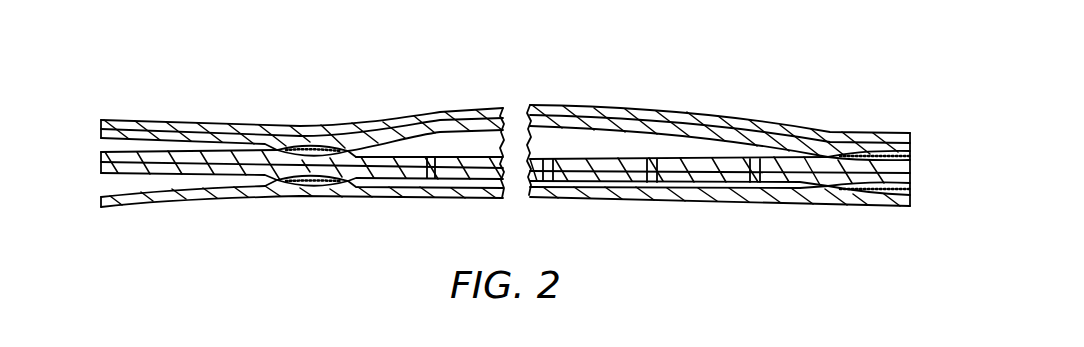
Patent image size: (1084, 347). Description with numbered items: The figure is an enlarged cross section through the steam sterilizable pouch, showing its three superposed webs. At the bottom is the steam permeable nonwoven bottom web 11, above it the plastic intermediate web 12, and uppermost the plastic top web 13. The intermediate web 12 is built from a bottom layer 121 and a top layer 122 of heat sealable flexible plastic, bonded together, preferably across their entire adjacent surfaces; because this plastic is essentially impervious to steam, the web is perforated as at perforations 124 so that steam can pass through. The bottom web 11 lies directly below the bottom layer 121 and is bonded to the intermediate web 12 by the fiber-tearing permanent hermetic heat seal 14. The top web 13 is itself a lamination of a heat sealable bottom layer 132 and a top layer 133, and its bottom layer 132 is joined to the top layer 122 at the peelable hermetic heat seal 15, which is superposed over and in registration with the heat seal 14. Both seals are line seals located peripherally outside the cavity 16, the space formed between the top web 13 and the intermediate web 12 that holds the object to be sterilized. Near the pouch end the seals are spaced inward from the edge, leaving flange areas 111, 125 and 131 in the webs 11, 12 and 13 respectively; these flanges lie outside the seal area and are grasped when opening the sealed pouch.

The bottom web 11 is at (501, 219).
The flange area 111 is at (168, 202).
The intermediate web 12 is at (511, 155).
The bottom layer 121 is at (900, 194).
The top layer 122 is at (912, 167).
The perforations 124 is at (434, 162).
The flange area 125 is at (138, 153).
The top web 13 is at (295, 109).
The flange area 131 is at (200, 124).
The bottom layer 132 is at (912, 150).
The top layer 133 is at (738, 140).
The permanent hermetic heat seal 14 is at (321, 186).
The peelable hermetic heat seal 15 is at (318, 148).
The cavity 16 is at (452, 140).